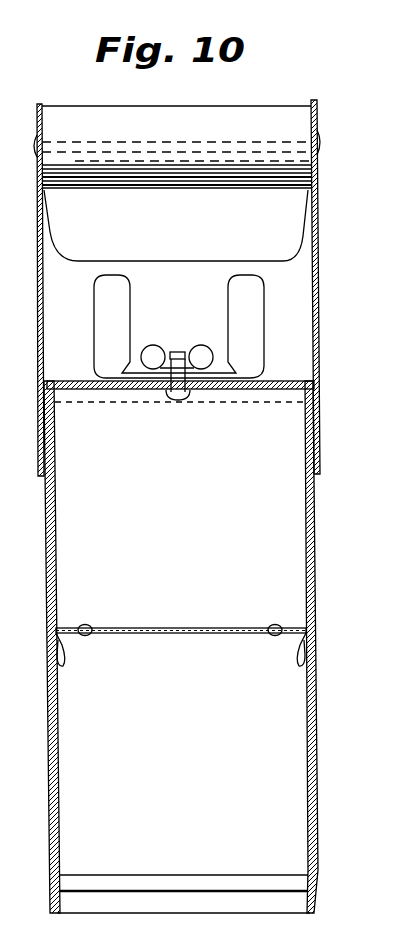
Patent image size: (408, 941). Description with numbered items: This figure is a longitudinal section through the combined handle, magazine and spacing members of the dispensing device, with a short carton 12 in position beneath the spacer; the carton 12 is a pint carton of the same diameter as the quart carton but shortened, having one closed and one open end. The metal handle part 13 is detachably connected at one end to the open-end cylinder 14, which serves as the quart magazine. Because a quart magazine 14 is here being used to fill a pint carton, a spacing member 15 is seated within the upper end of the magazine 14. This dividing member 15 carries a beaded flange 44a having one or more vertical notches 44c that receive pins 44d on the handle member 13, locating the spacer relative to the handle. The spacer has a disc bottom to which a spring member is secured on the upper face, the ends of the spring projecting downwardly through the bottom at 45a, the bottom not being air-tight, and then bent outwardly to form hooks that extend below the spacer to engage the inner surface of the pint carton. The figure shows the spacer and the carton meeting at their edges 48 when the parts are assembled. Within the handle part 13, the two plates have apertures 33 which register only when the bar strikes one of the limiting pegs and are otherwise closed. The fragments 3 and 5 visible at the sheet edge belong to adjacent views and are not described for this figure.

The carton 12 is at (59, 762).
The handle part 13 is at (318, 270).
The open-end cylinder 14 is at (318, 532).
The spacing member 15 is at (57, 512).
The apertures 33 is at (80, 382).
The beaded flange 44a is at (15, 765).
The vertical notches 44c is at (315, 389).
The pins 44d is at (306, 408).
The projecting ends of spring member 45a is at (305, 626).
The meeting edges 48 is at (62, 628).
The fragment 3 is at (4, 177).
The fragment 5 is at (4, 432).